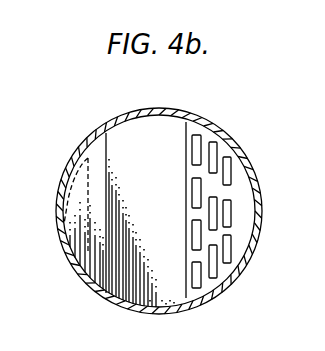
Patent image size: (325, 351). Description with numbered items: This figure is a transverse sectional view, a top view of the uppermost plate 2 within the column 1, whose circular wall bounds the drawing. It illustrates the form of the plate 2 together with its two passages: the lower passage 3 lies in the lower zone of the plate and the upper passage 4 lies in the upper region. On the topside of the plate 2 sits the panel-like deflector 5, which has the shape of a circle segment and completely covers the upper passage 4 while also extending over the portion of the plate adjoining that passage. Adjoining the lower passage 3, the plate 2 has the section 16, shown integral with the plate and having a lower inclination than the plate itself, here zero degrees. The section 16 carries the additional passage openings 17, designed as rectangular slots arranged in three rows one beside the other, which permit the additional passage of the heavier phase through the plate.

The column 1 is at (73, 162).
The plate 2 is at (140, 128).
The lower passage 3 is at (245, 222).
The upper passage 4 is at (57, 229).
The panel-like deflector 5 is at (100, 272).
The section 16 is at (218, 148).
The additional passage openings 17 is at (227, 258).